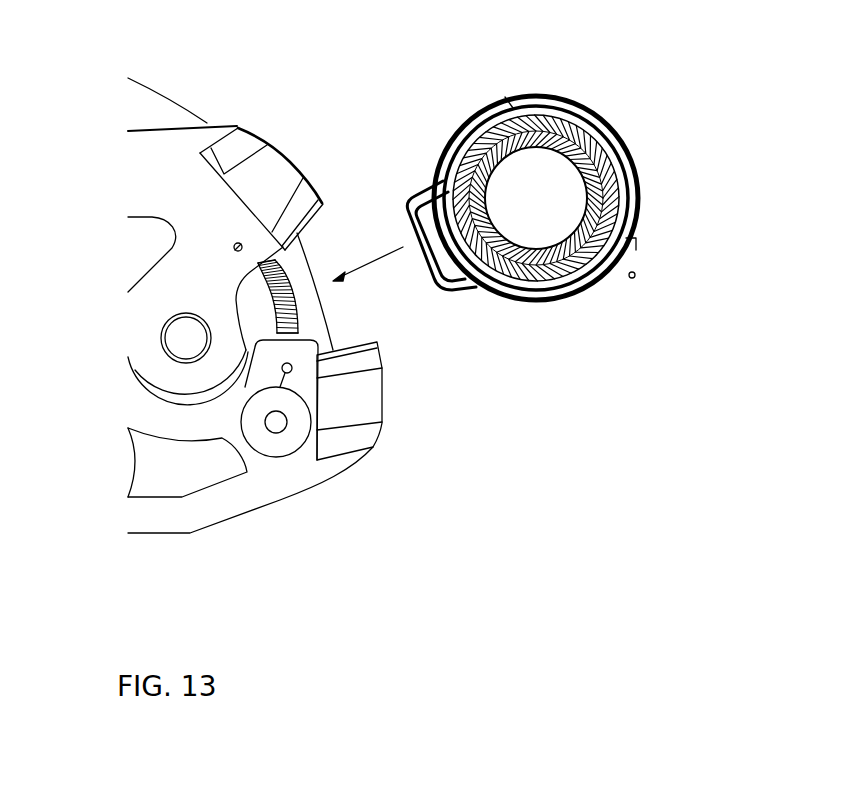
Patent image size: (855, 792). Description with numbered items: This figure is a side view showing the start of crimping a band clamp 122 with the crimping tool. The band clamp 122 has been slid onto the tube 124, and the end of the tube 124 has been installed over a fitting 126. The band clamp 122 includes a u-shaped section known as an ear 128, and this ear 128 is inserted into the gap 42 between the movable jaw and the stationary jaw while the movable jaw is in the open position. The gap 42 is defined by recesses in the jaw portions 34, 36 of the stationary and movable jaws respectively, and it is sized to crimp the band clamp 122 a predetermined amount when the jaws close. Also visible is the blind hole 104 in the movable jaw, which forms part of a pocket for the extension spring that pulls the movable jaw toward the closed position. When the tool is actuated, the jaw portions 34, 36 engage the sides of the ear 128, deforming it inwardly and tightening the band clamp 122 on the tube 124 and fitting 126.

The jaw portion 34 is at (380, 397).
The jaw portion 36 is at (307, 175).
The opening 42 is at (322, 244).
The blind hole 104 is at (298, 323).
The band clamp 122 is at (560, 92).
The tube 124 is at (522, 247).
The fitting 126 is at (617, 158).
The ear 128 is at (467, 290).